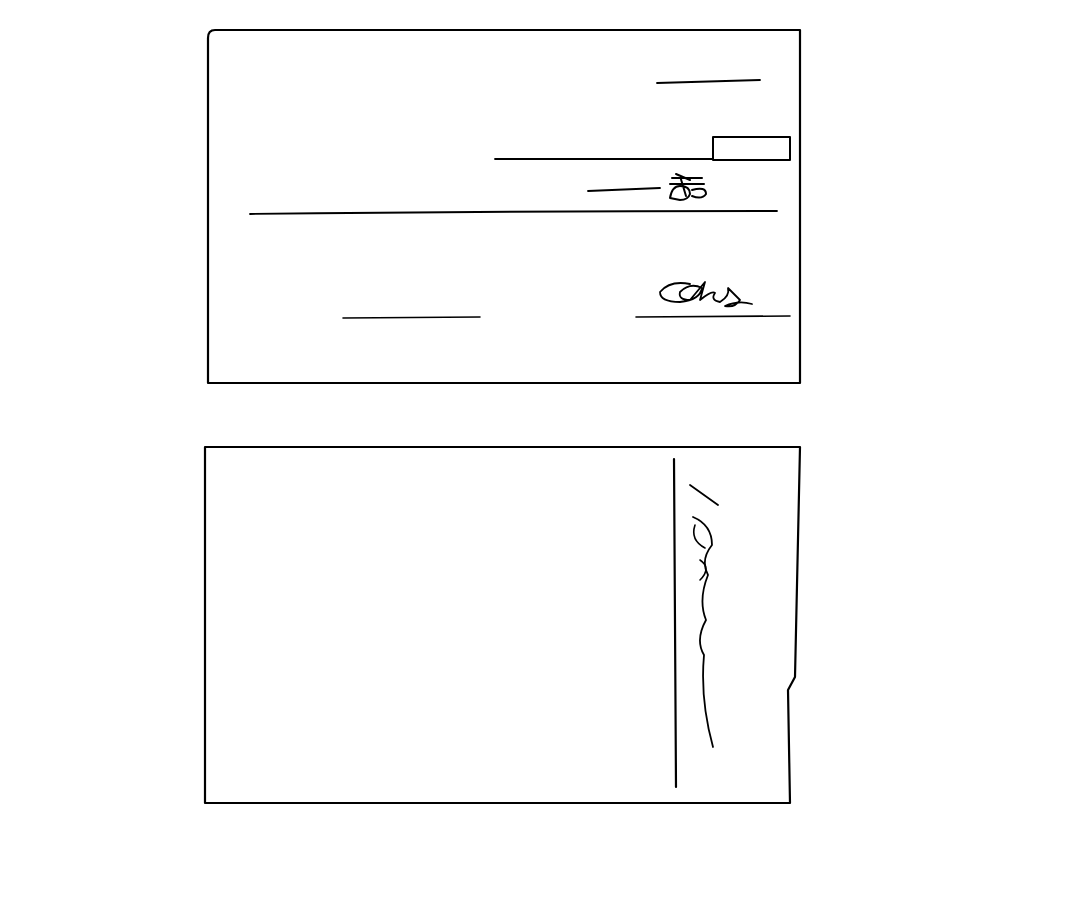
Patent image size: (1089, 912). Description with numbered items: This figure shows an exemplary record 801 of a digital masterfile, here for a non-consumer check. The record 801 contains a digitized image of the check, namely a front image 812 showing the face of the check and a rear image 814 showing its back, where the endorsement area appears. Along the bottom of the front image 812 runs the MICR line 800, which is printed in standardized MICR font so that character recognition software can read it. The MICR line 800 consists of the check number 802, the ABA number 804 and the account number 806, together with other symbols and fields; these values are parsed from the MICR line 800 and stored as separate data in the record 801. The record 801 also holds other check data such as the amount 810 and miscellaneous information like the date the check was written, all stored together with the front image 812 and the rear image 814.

The MICR line 800 is at (205, 363).
The record 801 is at (1020, 140).
The check number 802 is at (342, 372).
The ABA number 804 is at (500, 372).
The account number 806 is at (656, 372).
The amount 810 is at (798, 150).
The front image 812 is at (803, 88).
The rear image 814 is at (803, 587).